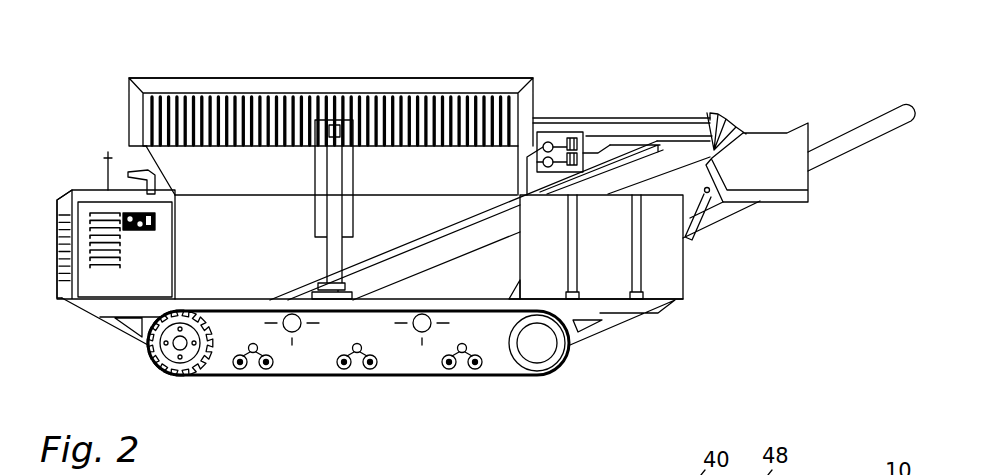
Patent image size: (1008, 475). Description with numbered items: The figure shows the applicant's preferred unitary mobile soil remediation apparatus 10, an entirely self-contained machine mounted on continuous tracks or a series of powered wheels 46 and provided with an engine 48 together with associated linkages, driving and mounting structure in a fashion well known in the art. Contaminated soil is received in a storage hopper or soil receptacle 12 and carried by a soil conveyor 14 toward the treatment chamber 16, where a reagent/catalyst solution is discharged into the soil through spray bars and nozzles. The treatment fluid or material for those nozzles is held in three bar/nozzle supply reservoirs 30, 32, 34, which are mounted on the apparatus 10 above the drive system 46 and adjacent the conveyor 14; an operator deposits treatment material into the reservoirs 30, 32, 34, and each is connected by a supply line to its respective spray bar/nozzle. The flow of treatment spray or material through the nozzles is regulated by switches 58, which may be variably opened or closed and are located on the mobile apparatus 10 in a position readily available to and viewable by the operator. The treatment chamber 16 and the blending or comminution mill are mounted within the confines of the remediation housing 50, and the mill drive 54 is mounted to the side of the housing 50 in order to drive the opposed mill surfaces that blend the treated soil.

The unitary mobile soil remediation apparatus 10 is at (778, 278).
The storage hopper 12 is at (272, 78).
The soil conveyor 14 is at (637, 172).
The treatment chamber 16 is at (768, 133).
The bar/nozzle supply reservoir 30 is at (542, 287).
The bar/nozzle supply reservoir 32 is at (608, 295).
The bar/nozzle supply reservoir 34 is at (675, 293).
The continuous tracks 46 is at (560, 368).
The engine 48 is at (82, 192).
The remediation housing 50 is at (482, 83).
The mill drive 54 is at (345, 135).
The switches 58 is at (557, 138).